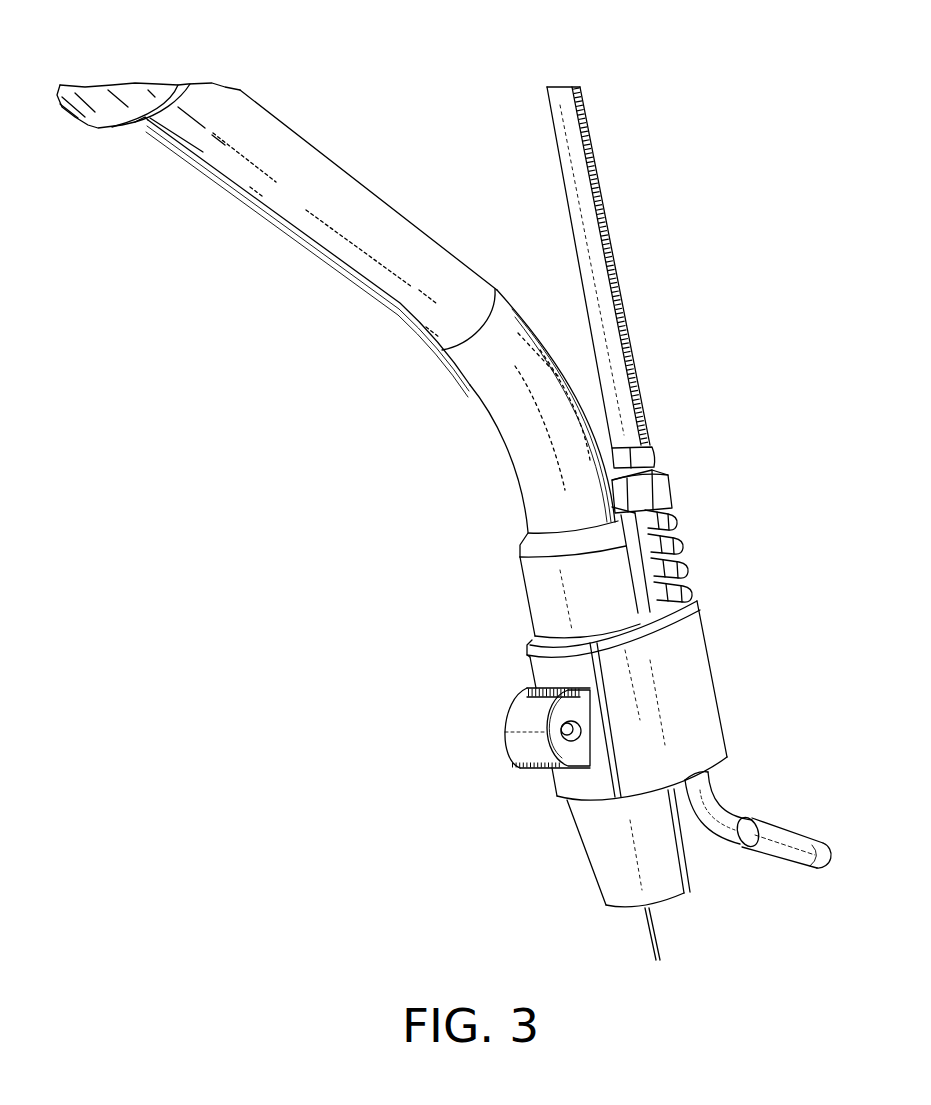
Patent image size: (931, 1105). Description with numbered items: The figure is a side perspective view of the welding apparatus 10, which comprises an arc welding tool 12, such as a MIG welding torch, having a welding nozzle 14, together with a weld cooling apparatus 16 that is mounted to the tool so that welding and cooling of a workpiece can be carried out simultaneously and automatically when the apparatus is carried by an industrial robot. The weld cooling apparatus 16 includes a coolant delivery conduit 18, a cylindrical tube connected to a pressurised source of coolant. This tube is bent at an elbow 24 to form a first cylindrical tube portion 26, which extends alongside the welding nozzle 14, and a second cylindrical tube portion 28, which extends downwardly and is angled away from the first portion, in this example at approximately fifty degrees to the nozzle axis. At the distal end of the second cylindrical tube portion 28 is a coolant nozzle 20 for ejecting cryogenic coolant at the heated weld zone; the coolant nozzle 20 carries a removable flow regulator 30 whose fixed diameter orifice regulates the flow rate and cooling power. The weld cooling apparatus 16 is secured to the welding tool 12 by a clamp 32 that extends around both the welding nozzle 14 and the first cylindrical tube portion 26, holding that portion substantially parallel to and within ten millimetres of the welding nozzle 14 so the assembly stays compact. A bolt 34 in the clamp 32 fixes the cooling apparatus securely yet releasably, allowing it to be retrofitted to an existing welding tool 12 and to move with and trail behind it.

The welding apparatus 10 is at (358, 601).
The arc welding tool 12 is at (478, 393).
The welding nozzle 14 is at (592, 840).
The weld cooling apparatus 16 is at (740, 480).
The coolant delivery conduit 18 is at (647, 425).
The coolant nozzle 20 is at (776, 862).
The elbow 24 is at (706, 830).
The first cylindrical tube portion 26 is at (705, 785).
The second cylindrical tube portion 28 is at (736, 818).
The removable flow regulator 30 is at (808, 868).
The clamp 32 is at (570, 672).
The bolt 34 is at (566, 748).